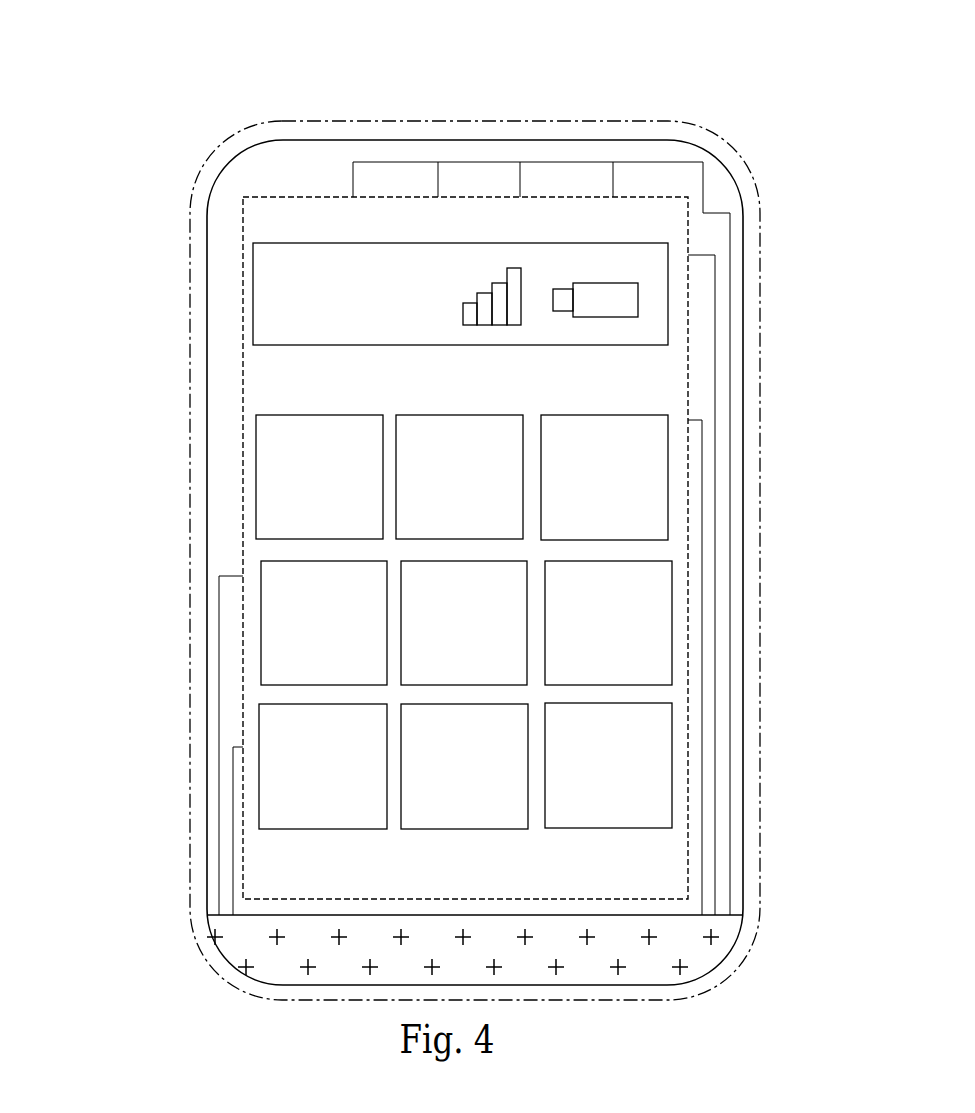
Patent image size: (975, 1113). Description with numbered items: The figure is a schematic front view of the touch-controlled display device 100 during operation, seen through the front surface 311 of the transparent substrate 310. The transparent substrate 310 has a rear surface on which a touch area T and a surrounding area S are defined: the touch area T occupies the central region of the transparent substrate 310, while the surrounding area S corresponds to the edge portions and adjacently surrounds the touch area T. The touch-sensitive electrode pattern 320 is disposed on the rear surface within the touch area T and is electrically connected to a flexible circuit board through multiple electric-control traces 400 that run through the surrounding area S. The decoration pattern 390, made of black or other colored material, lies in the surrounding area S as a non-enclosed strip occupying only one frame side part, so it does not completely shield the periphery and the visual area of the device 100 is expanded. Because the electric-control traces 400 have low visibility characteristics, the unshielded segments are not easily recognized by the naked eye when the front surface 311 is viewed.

The touch-controlled display device 100 is at (443, 507).
The surrounding area S is at (765, 142).
The touch area T is at (323, 172).
The transparent substrate 310 is at (133, 742).
The front surface 311 is at (176, 578).
The electric-control traces 400 is at (219, 786).
The touch-sensitive electrode pattern 320 is at (648, 632).
The decoration pattern 390 is at (183, 938).